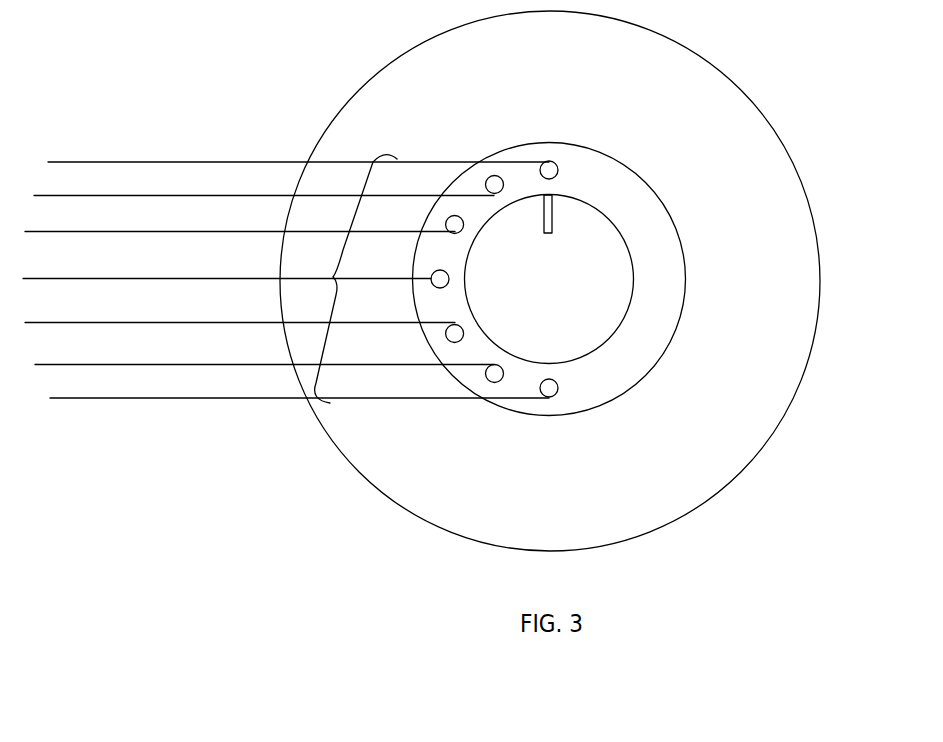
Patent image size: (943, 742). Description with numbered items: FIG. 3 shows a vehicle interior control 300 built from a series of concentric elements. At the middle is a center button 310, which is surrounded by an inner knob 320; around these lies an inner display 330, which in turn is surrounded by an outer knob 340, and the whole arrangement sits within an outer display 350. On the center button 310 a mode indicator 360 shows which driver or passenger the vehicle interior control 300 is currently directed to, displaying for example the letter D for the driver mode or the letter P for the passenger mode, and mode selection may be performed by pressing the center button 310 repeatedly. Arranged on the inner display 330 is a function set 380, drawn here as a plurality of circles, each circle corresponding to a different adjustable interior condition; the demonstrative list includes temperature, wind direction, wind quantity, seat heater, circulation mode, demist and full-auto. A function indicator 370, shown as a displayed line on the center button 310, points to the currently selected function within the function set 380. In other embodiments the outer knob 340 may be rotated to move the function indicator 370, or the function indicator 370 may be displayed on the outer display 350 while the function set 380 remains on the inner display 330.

The vehicle interior control 300 is at (315, 650).
The center button 310 is at (610, 261).
The inner knob 320 is at (635, 283).
The inner display 330 is at (650, 320).
The outer knob 340 is at (663, 352).
The outer display 350 is at (715, 394).
The mode indicator 360 is at (567, 256).
The function indicator 370 is at (553, 210).
The function set 380 is at (333, 277).